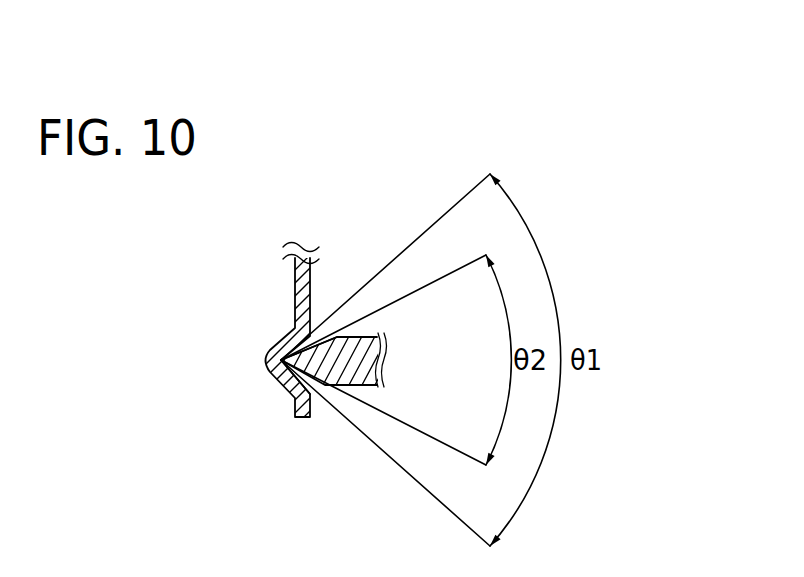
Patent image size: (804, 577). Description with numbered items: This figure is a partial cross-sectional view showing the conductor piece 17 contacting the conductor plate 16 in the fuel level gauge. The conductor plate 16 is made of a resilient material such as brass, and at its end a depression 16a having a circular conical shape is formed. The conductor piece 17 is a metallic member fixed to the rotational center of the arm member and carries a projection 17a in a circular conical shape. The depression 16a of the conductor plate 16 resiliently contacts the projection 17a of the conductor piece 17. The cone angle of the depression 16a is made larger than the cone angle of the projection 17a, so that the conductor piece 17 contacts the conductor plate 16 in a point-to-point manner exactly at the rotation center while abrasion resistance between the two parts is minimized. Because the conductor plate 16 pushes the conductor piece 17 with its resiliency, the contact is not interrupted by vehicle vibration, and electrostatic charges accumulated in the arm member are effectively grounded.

The conductor plate 16 is at (295, 295).
The depression 16a is at (305, 382).
The conductor piece 17 is at (371, 336).
The projection 17a is at (318, 340).